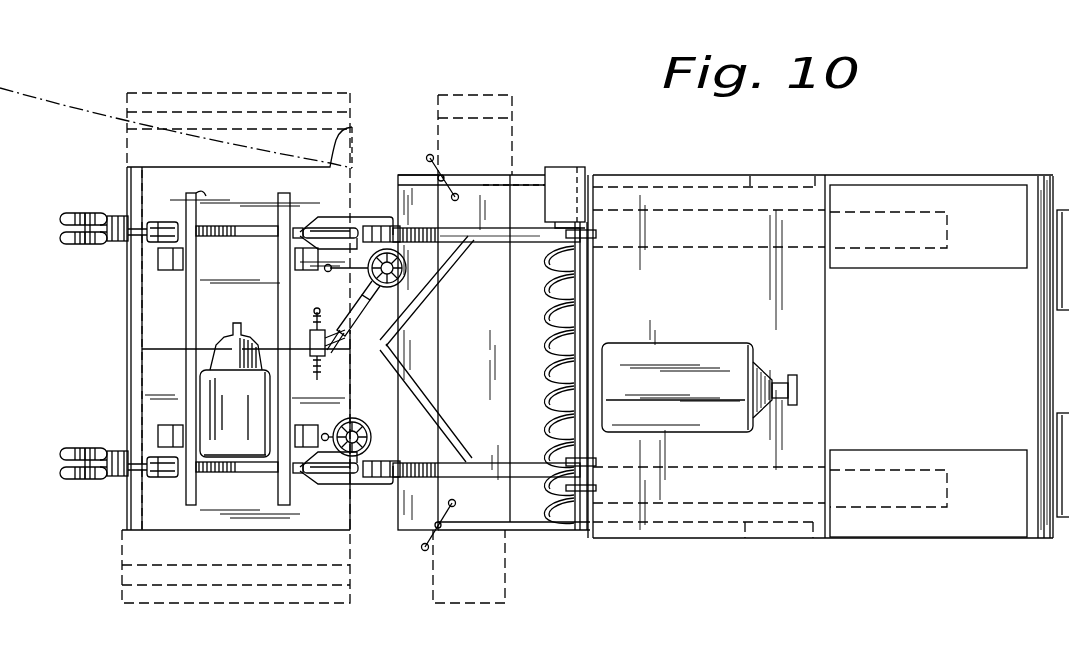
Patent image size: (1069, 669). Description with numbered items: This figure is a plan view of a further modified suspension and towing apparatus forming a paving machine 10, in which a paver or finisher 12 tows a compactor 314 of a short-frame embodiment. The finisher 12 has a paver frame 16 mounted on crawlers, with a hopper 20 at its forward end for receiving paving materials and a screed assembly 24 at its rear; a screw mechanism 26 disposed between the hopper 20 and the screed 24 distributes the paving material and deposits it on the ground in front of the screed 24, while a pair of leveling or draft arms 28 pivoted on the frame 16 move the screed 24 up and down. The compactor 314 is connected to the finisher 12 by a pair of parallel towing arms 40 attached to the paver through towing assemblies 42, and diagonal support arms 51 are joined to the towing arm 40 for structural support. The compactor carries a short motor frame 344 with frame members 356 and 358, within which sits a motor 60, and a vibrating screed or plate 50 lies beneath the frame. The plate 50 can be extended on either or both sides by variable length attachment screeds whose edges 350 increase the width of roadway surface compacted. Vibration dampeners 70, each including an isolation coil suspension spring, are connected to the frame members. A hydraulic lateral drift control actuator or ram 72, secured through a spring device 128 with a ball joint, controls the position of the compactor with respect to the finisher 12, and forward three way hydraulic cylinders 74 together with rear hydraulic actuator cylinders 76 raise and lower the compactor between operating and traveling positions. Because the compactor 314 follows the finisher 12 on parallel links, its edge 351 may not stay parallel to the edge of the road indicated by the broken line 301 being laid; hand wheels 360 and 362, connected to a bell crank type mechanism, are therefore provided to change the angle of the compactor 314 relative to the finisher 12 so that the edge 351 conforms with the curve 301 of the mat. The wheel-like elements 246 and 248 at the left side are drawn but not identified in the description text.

The paving machine 10 is at (796, 165).
The paver or finisher 12 is at (884, 178).
The paver frame 16 is at (730, 540).
The hopper 20 is at (952, 182).
The screed assembly 24 is at (410, 532).
The screw mechanism 26 is at (548, 487).
The leveling or draft arms 28 is at (548, 532).
The towing arms 40 is at (498, 213).
The towing assemblies 42 is at (578, 224).
The vibrating screed or plate 50 is at (236, 169).
The diagonal support arms 51 is at (415, 303).
The motor 60 is at (210, 334).
The vibration dampeners 70 is at (166, 272).
The hydraulic lateral drift control actuator or ram 72 is at (350, 328).
The forward three way hydraulic cylinders 74 is at (338, 228).
The rear hydraulic actuator cylinders 76 is at (160, 228).
The spring device 128 is at (300, 336).
The front wheel 246 is at (127, 222).
The front wheel tire 248 is at (78, 216).
The broken line 301 is at (93, 80).
The compactor 314 is at (355, 176).
The short motor frame 344 is at (250, 208).
The edges 350 is at (250, 130).
The edge 351 is at (352, 128).
The frame member 356 is at (242, 236).
The frame member 358 is at (197, 196).
The hand wheel 360 is at (432, 284).
The hand wheel 362 is at (368, 426).